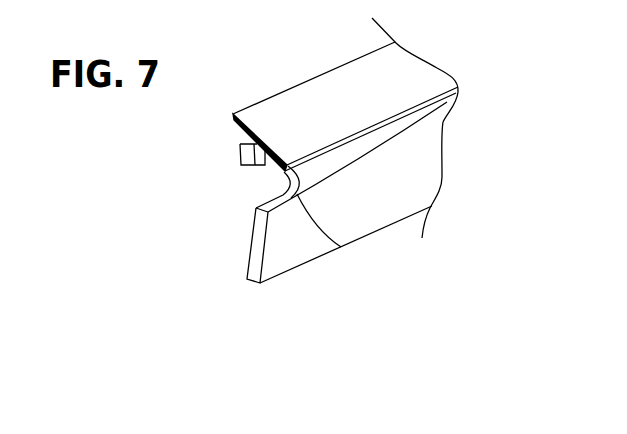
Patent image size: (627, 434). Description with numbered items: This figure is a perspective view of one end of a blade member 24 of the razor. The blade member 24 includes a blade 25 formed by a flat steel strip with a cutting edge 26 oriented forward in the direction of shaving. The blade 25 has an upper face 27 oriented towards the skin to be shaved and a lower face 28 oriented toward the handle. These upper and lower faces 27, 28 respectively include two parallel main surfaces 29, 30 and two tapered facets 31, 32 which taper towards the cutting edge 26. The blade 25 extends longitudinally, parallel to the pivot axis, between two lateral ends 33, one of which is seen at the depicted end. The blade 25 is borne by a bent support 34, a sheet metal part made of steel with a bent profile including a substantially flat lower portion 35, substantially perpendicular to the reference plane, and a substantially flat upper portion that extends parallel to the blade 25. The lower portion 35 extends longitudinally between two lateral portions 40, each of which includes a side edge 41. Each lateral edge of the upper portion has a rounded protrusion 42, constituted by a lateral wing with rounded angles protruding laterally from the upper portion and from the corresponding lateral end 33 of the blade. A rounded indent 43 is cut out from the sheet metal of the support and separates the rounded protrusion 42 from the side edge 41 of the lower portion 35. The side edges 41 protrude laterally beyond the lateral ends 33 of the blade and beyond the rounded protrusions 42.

The blade member 24 is at (507, 142).
The blade 25 is at (459, 93).
The cutting edge 26 is at (247, 109).
The upper face 27 is at (401, 77).
The lower face 28 is at (262, 158).
The main surface 29 is at (430, 79).
The main surface 30 is at (275, 168).
The tapered facet 31 is at (300, 89).
The tapered facet 32 is at (242, 128).
The lateral end 33 is at (247, 143).
The bent support 34 is at (444, 177).
The lower portion 35 is at (412, 195).
The lateral portion 40 is at (288, 271).
The side edge 41 is at (250, 256).
The rounded protrusion 42 is at (247, 157).
The rounded indent 43 is at (341, 249).